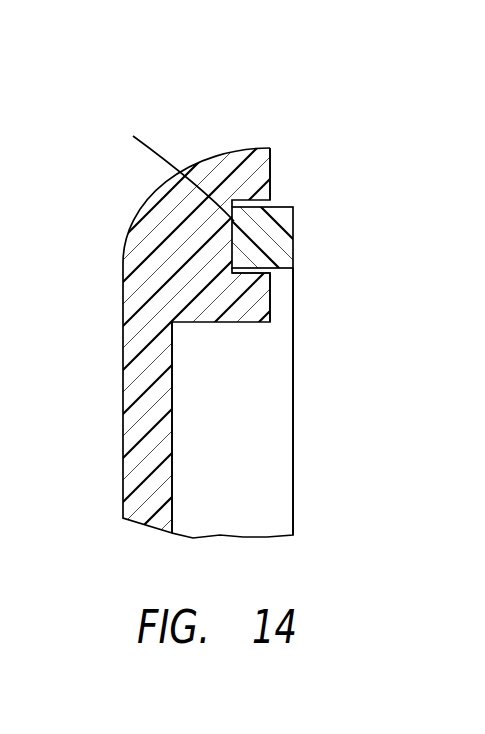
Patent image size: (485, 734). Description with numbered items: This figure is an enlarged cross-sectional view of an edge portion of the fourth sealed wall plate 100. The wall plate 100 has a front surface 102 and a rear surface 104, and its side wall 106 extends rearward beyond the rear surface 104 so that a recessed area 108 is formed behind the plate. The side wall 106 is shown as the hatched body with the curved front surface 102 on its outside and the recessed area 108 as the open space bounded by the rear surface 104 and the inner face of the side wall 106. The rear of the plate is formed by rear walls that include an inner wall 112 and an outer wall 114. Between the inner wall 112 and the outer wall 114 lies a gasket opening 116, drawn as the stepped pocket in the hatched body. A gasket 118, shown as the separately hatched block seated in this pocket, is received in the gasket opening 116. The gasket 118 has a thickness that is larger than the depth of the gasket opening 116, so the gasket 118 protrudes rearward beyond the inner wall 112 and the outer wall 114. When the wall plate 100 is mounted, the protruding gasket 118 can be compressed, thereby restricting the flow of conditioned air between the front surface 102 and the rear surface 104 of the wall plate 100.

The sealed wall plate 100 is at (212, 100).
The front surface 102 is at (123, 377).
The rear surface 104 is at (172, 476).
The side wall 106 is at (150, 195).
The recessed area 108 is at (172, 400).
The inner wall 112 is at (272, 317).
The outer wall 114 is at (271, 170).
The gasket opening 116 is at (167, 171).
The gasket 118 is at (293, 235).